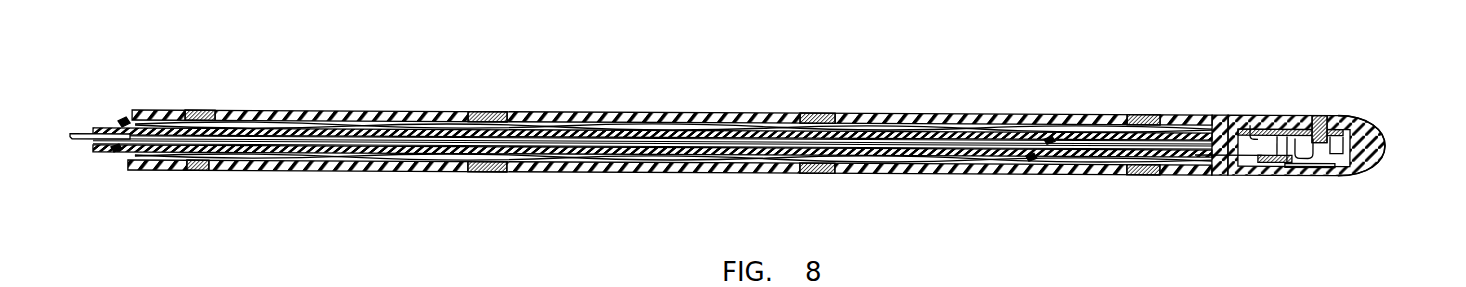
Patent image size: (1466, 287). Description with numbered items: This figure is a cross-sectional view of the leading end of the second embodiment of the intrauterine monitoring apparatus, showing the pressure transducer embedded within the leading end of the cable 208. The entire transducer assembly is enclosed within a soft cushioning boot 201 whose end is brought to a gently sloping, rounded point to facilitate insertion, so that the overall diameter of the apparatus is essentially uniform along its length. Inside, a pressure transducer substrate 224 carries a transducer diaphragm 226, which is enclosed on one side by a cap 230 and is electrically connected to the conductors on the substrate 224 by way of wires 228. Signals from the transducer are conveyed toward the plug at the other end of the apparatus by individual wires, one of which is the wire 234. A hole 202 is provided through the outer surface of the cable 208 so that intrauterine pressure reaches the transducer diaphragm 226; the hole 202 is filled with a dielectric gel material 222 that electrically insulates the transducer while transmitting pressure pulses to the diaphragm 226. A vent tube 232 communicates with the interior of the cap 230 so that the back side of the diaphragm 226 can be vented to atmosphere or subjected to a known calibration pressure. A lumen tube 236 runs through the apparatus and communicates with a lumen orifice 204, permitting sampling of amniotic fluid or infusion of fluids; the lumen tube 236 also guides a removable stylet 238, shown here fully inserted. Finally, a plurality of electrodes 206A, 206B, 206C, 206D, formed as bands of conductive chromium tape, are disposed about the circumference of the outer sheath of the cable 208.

The cushioning boot 201 is at (1380, 137).
The hole 202 is at (1327, 124).
The lumen orifice 204 is at (1222, 117).
The electrode 206A is at (193, 113).
The electrode 206B is at (487, 115).
The electrode 206C is at (820, 113).
The electrode 206D is at (1143, 110).
The cable 208 is at (596, 111).
The dielectric gel material 222 is at (1313, 122).
The pressure transducer substrate 224 is at (1288, 122).
The transducer diaphragm 226 is at (1320, 144).
The wires 228 is at (1340, 151).
The cap 230 is at (1350, 152).
The vent tube 232 is at (925, 126).
The wire 234 is at (443, 127).
The lumen tube 236 is at (122, 123).
The stylet 238 is at (80, 140).